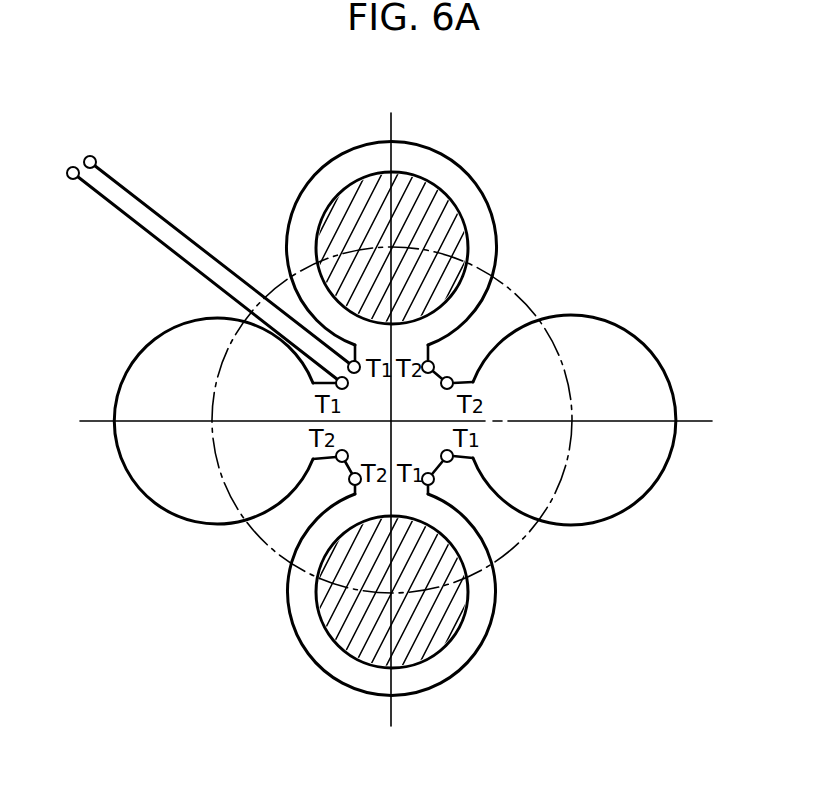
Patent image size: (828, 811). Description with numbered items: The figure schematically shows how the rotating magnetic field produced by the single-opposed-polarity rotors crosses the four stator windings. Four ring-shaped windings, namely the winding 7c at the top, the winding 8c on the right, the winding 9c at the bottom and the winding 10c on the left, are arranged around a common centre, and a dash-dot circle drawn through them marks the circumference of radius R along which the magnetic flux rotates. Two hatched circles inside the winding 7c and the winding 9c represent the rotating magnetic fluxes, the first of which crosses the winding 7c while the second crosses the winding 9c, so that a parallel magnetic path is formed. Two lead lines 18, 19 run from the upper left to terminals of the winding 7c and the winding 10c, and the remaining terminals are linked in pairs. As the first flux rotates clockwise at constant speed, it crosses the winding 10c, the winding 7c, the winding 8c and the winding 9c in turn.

The winding 7c is at (353, 136).
The winding 8c is at (673, 479).
The winding 9c is at (494, 648).
The winding 10c is at (116, 468).
The lead wire 18 is at (92, 155).
The lead wire 19 is at (67, 178).